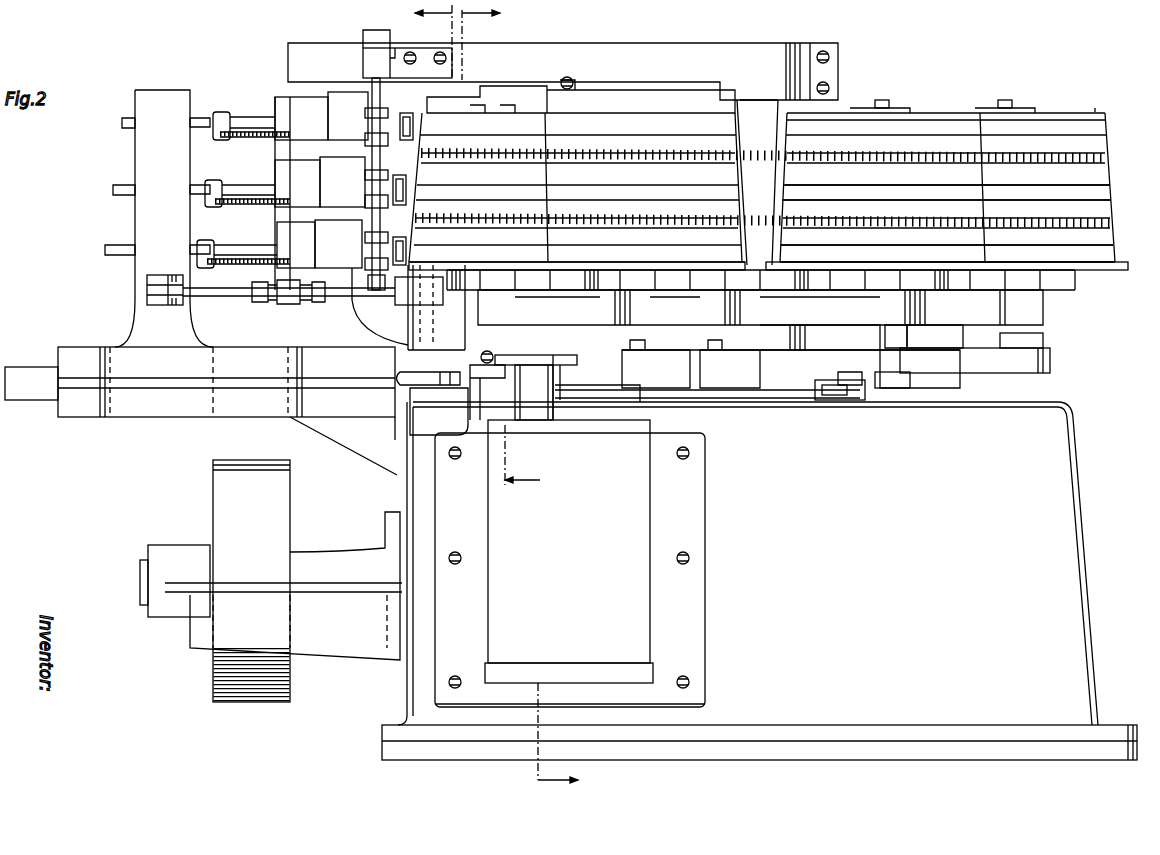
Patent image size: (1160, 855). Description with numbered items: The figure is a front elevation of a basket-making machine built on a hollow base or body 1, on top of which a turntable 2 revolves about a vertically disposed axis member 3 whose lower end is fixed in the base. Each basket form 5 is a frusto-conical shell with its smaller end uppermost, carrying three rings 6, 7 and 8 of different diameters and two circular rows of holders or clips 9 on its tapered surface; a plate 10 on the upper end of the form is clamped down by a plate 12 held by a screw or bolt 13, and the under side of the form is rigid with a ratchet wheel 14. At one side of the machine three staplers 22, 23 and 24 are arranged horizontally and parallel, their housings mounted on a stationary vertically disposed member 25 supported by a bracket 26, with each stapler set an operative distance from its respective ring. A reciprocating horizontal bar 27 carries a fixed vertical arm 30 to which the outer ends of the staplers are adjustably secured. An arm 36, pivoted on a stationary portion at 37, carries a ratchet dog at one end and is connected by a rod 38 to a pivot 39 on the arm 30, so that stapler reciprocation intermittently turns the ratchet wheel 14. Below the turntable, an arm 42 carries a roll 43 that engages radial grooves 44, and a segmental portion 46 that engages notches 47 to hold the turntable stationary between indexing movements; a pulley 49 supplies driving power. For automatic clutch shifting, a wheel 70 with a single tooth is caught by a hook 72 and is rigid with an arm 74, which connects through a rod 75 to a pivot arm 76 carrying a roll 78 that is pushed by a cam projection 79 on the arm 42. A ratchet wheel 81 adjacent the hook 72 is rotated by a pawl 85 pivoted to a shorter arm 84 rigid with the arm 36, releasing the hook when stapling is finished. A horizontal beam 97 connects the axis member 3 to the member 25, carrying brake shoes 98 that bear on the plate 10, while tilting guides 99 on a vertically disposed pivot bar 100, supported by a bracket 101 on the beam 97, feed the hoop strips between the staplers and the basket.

The hollow base or body 1 is at (1085, 515).
The turntable 2 is at (722, 310).
The axis member 3 is at (757, 182).
The basket form 5 is at (762, 187).
The ring 6 is at (1106, 125).
The ring 7 is at (1108, 195).
The ring 8 is at (1112, 255).
The holders or clips 9 is at (1125, 220).
The plate 10 is at (749, 246).
The plate 12 is at (1025, 108).
The screw or bolt 13 is at (1005, 98).
The ratchet wheel 14 is at (485, 255).
The stapler 22 is at (290, 191).
The stapler 23 is at (285, 182).
The stapler 24 is at (279, 244).
The stationary vertically disposed member 25 is at (303, 312).
The bracket 26 is at (345, 420).
The reciprocating bar 27 is at (15, 367).
The arm 30 is at (158, 100).
The arm 36 is at (430, 277).
The pivot 37 is at (408, 325).
The rod 38 is at (222, 296).
The pivot 39 is at (147, 291).
The arm 42 is at (995, 365).
The roll 43 is at (1043, 340).
The grooves 44 is at (920, 320).
The segmental portion 46 is at (945, 340).
The notches 47 is at (868, 310).
The pulley 49 is at (255, 702).
The wheel 70 is at (530, 365).
The hook 72 is at (568, 355).
The arm 74 is at (555, 400).
The rod 75 is at (780, 398).
The pivot arm 76 is at (855, 395).
The roll 78 is at (850, 368).
The cam projection 79 is at (895, 388).
The ratchet wheel 81 is at (485, 350).
The shorter arm 84 is at (430, 372).
The ratchet dog or pawl 85 is at (440, 390).
The horizontal beam 97 is at (572, 55).
The brake shoes 98 is at (490, 100).
The guides 99 is at (405, 140).
The pivot bar 100 is at (372, 90).
The bracket 101 is at (405, 48).